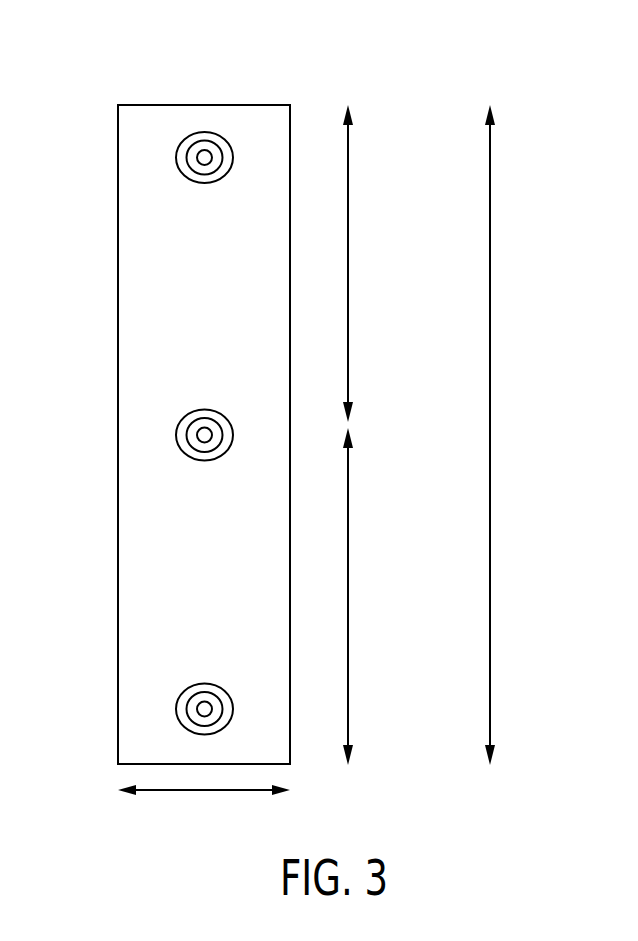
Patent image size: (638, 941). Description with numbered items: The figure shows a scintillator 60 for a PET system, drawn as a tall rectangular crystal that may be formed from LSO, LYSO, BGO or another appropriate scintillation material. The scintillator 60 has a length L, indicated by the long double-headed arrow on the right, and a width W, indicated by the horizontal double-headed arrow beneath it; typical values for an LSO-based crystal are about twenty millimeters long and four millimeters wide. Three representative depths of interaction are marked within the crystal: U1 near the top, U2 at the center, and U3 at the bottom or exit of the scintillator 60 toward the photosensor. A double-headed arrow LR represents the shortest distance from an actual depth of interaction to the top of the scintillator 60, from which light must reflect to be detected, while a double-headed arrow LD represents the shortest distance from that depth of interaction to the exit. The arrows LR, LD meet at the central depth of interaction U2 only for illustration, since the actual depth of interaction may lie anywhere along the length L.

The scintillator 60 is at (213, 51).
The depth of interaction near the top U1 is at (176, 157).
The depth of interaction at the center U2 is at (176, 435).
The depth of interaction at the bottom U3 is at (176, 709).
The double-headed arrow LR is at (348, 265).
The double-headed arrow LD is at (348, 597).
The length L is at (490, 438).
The width W is at (210, 793).